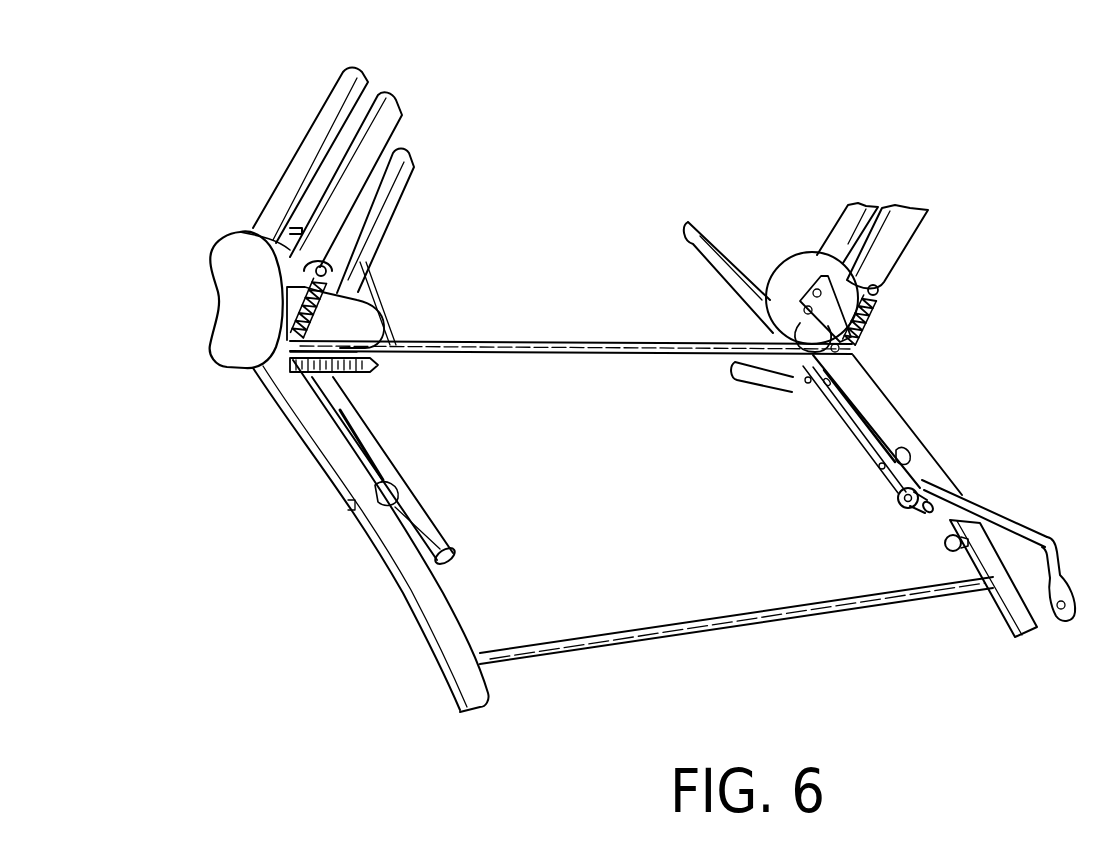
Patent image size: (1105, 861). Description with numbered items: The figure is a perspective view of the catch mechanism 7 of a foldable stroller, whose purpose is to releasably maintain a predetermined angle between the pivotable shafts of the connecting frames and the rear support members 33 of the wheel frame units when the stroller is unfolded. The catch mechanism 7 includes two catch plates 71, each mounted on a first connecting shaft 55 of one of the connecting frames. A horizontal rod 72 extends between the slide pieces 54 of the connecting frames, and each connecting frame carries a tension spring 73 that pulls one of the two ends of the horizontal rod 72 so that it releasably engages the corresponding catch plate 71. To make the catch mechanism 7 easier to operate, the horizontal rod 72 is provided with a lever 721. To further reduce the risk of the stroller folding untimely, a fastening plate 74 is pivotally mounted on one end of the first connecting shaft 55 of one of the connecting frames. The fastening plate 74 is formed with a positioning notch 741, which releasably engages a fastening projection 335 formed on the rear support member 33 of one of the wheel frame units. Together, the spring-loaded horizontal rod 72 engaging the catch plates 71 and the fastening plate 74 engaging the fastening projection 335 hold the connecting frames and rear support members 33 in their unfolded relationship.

The catch mechanism 7 is at (896, 381).
The rear support member 33 is at (884, 428).
The fastening projection 335 is at (946, 543).
The slide piece 54 is at (246, 343).
The first connecting shaft 55 is at (846, 263).
The catch plate 71 is at (378, 318).
The horizontal rod 72 is at (605, 352).
The lever 721 is at (310, 374).
The tension spring 73 is at (338, 303).
The fastening plate 74 is at (1020, 538).
The positioning notch 741 is at (987, 520).